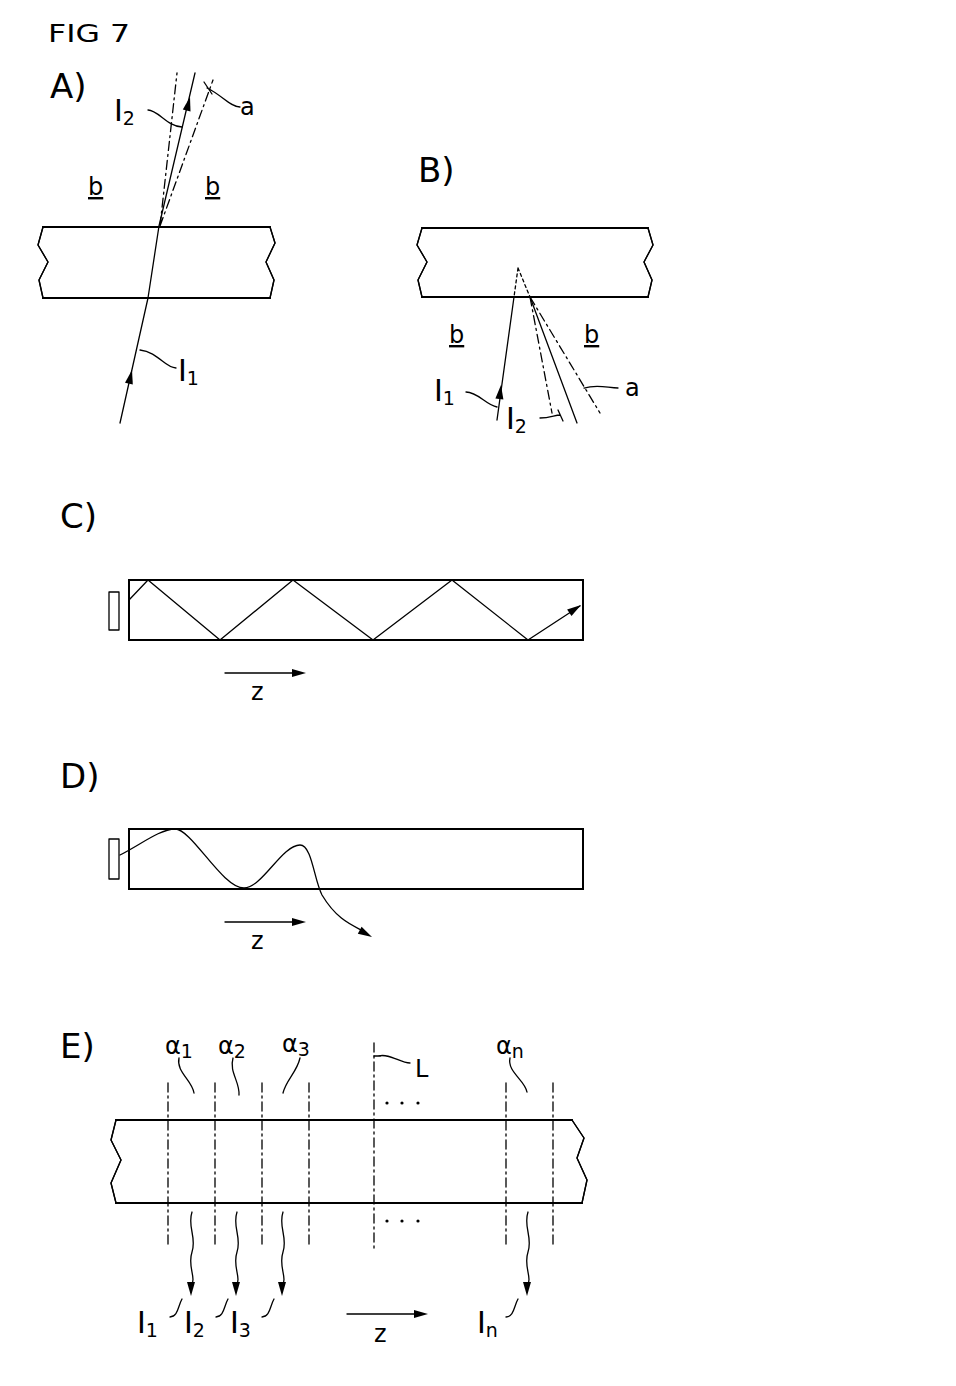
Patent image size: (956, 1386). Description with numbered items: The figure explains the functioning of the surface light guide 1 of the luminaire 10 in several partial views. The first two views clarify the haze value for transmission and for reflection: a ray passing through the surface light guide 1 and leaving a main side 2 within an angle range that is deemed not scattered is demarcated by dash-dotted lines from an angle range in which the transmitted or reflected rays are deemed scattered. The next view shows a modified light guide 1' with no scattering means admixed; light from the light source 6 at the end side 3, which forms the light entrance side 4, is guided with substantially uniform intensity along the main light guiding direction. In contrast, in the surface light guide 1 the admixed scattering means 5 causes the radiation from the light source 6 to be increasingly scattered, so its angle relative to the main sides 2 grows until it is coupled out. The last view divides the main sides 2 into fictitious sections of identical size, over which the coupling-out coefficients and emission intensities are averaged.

The surface light guide 1 is at (383, 692).
The modified light guide 1' is at (356, 573).
The main sides 2 is at (238, 227).
The end sides 3 is at (585, 592).
The light entrance sides 4 is at (122, 625).
The scattering means 5 is at (266, 262).
The light source 6 is at (108, 607).
The luminaire 10 is at (636, 838).